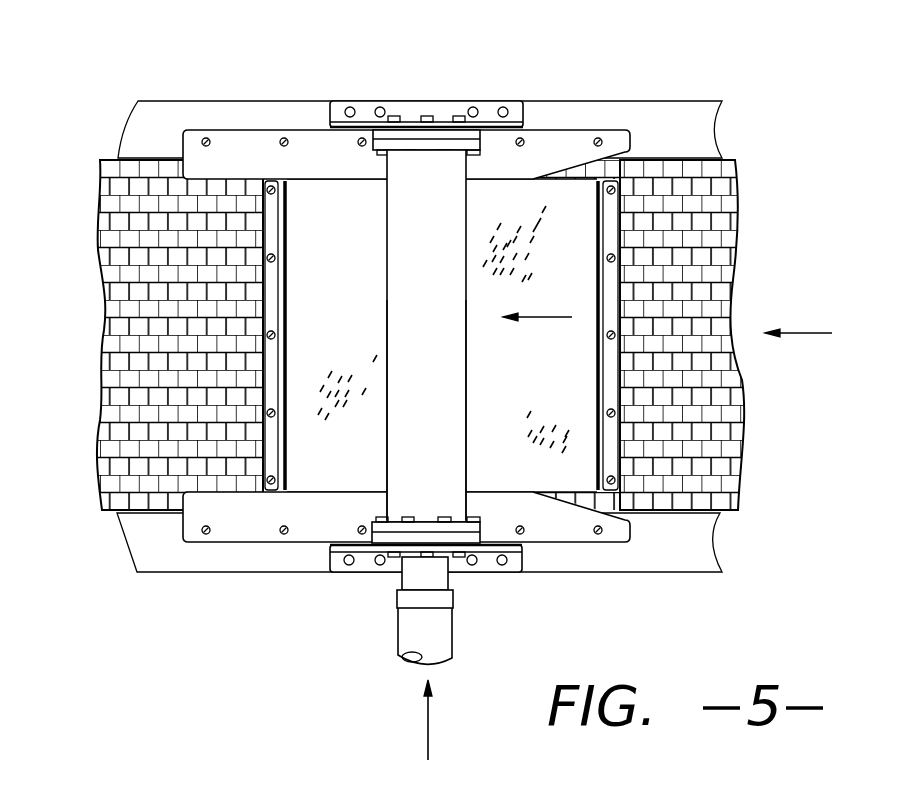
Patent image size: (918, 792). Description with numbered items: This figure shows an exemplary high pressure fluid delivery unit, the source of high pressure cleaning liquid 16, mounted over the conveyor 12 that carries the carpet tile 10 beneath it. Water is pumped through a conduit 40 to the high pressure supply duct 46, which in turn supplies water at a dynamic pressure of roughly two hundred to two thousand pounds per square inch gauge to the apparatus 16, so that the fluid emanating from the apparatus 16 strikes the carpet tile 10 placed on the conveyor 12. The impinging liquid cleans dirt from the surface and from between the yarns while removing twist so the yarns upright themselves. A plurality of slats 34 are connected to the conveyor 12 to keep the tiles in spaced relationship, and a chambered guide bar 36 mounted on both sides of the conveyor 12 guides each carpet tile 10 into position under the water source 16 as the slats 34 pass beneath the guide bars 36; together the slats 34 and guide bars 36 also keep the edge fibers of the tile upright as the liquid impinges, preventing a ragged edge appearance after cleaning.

The carpet tile 10 is at (562, 379).
The conveyor 12 is at (110, 160).
The source of high pressure cleaning liquid 16 is at (427, 183).
The slats 34 is at (622, 200).
The chambered guide bar 36 is at (308, 150).
The conduit 40 is at (457, 640).
The high pressure supply duct 46 is at (444, 437).